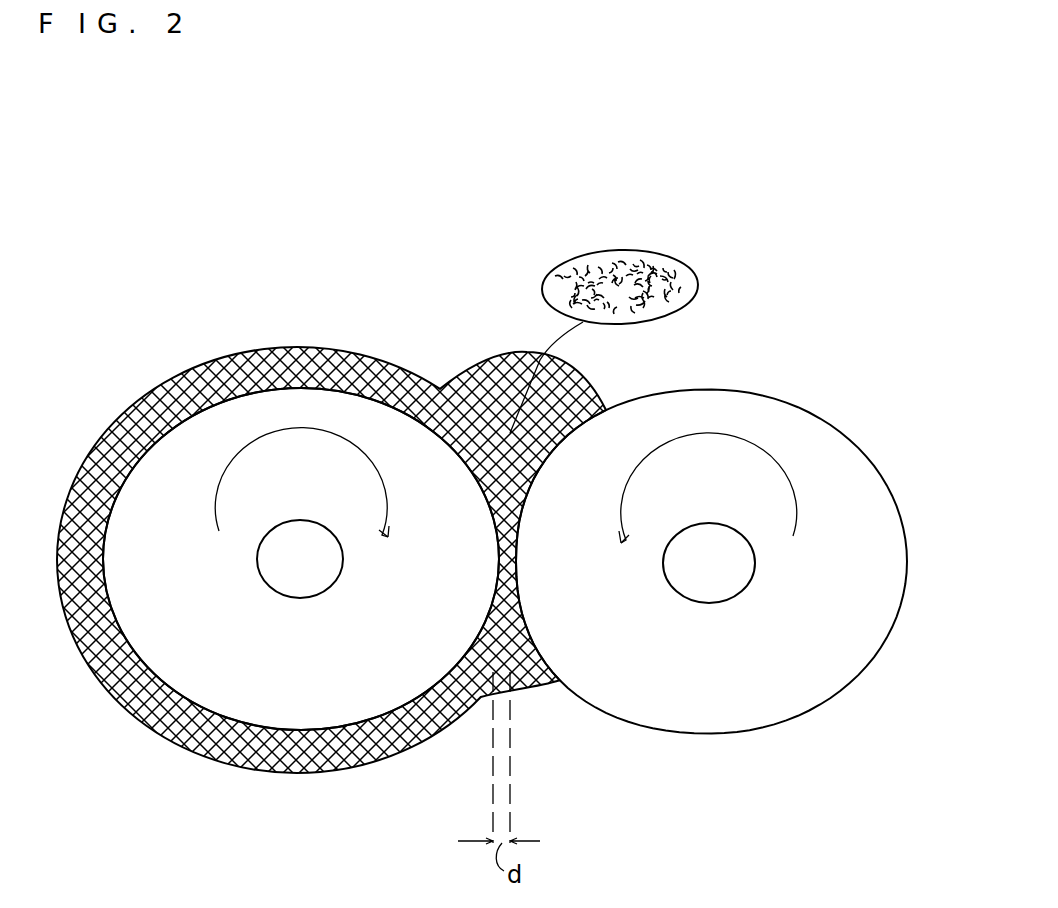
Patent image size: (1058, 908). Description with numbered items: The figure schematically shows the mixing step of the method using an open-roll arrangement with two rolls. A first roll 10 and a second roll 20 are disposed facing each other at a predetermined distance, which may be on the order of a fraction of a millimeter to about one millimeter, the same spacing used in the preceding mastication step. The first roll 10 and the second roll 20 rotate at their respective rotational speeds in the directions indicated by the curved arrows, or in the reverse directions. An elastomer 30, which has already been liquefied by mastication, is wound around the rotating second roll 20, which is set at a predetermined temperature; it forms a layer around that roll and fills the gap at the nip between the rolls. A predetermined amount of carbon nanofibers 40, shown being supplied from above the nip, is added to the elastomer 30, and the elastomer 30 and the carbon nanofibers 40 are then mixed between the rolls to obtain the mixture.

The first roll 10 is at (734, 687).
The second roll 20 is at (320, 683).
The elastomer 30 is at (168, 385).
The carbon nanofibers 40 is at (670, 313).